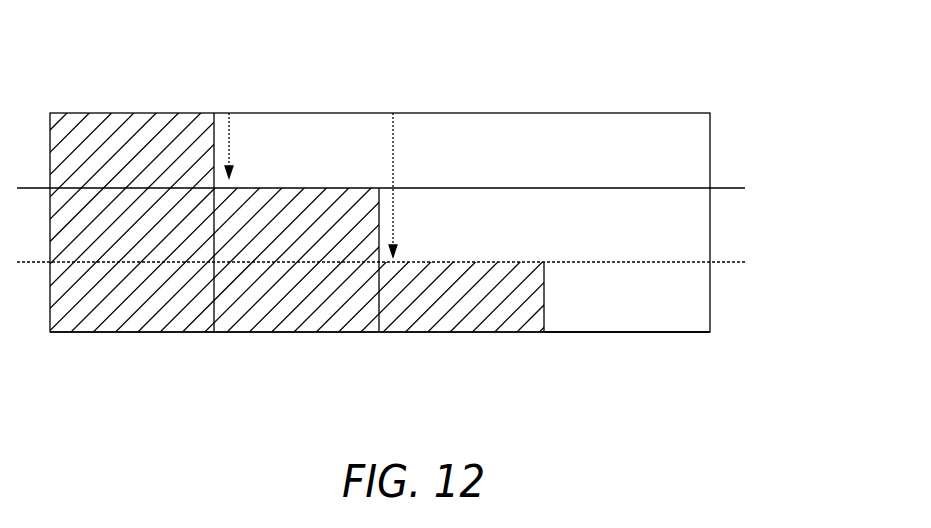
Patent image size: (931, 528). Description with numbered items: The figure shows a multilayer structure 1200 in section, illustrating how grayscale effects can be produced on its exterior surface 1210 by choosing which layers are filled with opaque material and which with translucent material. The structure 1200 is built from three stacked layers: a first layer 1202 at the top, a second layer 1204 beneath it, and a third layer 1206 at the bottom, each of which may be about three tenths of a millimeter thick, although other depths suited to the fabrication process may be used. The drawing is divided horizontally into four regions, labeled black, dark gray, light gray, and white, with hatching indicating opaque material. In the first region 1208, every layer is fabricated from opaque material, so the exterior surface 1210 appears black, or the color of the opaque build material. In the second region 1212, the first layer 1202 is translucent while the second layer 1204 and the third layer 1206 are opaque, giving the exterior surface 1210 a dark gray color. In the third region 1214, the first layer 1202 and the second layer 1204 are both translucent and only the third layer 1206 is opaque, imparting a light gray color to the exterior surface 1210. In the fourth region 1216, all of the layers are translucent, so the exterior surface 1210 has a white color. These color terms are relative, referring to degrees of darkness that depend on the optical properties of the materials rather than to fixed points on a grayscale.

The structure 1200 is at (396, 209).
The exterior surface 1210 is at (695, 113).
The first layer 1202 is at (731, 156).
The second layer 1204 is at (731, 234).
The third layer 1206 is at (727, 304).
The first region 1208 is at (132, 357).
The second region 1212 is at (297, 357).
The third region 1214 is at (462, 357).
The fourth region 1216 is at (638, 357).